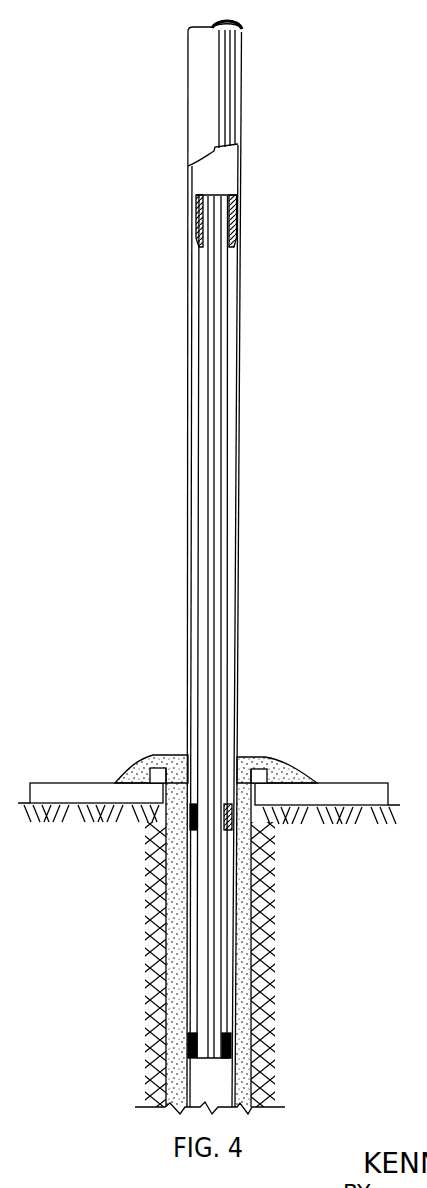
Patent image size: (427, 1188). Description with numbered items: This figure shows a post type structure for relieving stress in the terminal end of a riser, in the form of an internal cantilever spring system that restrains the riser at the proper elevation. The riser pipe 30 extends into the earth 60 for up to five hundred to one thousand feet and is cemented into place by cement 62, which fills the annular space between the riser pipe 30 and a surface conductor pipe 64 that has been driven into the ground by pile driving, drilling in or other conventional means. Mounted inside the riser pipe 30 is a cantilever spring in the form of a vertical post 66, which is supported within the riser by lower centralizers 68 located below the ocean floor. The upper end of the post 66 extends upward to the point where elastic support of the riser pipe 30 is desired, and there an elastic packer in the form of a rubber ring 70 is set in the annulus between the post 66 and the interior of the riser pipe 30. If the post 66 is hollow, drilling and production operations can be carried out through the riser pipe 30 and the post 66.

The riser pipe 30 is at (242, 49).
The earth 60 is at (412, 881).
The cement 62 is at (243, 1001).
The surface conductor pipe 64 is at (252, 913).
The vertical post 66 is at (217, 455).
The lower centralizers 68 is at (188, 828).
The rubber ring 70 is at (237, 213).